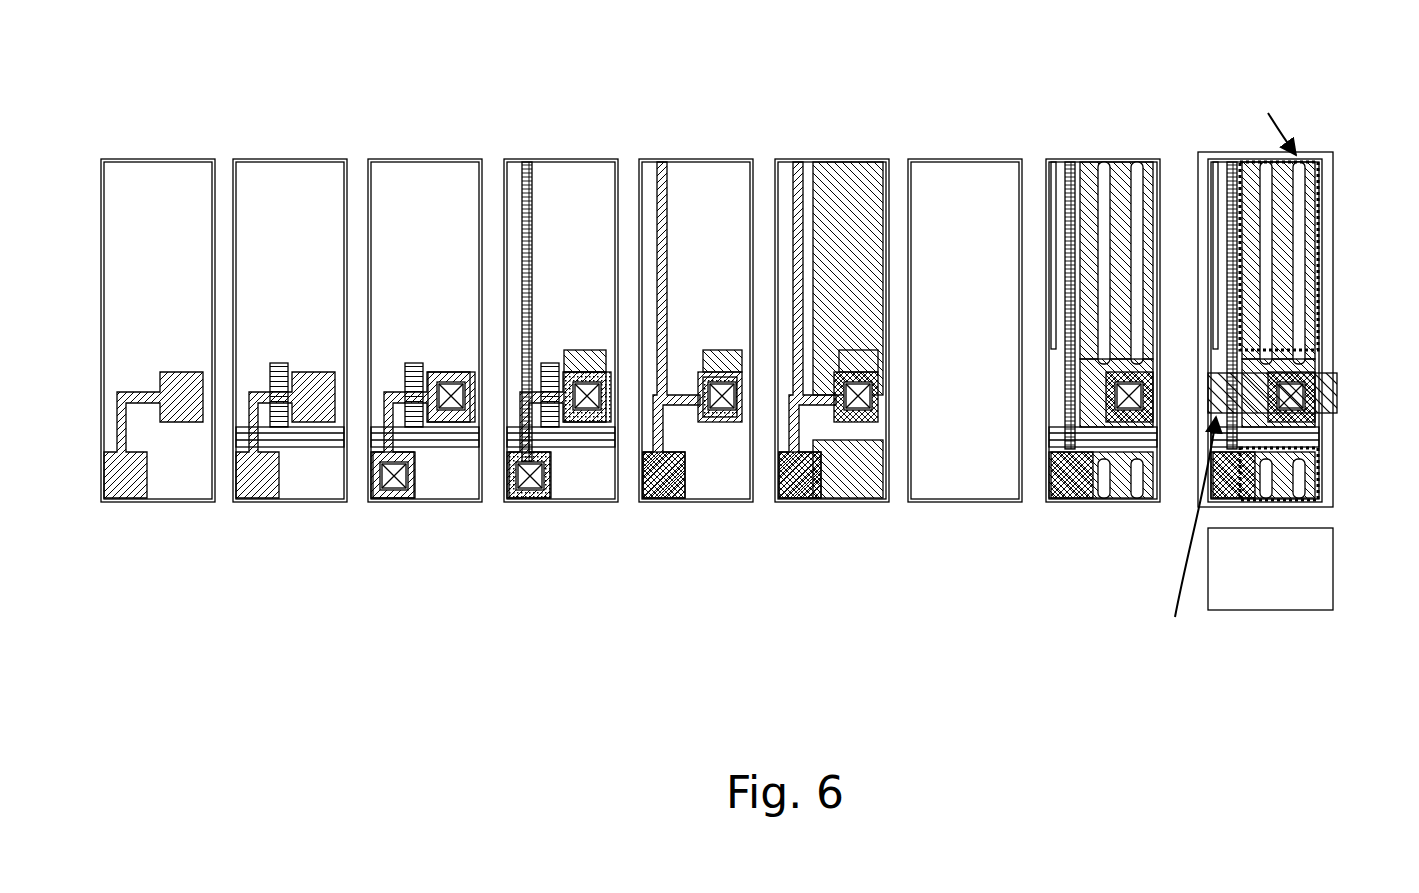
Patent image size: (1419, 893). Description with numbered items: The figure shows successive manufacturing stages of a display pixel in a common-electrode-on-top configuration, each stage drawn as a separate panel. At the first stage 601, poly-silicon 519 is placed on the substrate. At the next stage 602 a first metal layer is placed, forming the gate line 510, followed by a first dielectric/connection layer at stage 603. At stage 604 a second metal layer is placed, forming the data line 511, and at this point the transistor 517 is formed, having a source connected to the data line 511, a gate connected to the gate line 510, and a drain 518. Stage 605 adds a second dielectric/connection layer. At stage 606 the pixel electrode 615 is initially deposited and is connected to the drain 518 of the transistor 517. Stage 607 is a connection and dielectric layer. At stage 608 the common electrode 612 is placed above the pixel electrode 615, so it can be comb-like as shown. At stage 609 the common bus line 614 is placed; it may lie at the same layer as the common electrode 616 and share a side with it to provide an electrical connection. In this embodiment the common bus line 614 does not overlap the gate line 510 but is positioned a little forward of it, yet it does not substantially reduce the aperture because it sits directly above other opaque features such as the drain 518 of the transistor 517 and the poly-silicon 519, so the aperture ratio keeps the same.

The gate line 510 is at (377, 482).
The data line 511 is at (562, 273).
The transistor 517 is at (576, 525).
The drain 518 is at (804, 325).
The poly-silicon 519 is at (210, 298).
The poly-silicon stage 601 is at (209, 381).
The first metal layer stage 602 is at (375, 416).
The first dielectric/connection layer stage 603 is at (425, 415).
The second metal layer stage 604 is at (573, 378).
The second dielectric/connection layer stage 605 is at (775, 373).
The pixel electrode stage 606 is at (832, 391).
The connection and dielectric layer stage 607 is at (972, 450).
The common electrode stage 608 is at (1196, 388).
The common bus line stage 609 is at (1243, 382).
The common electrode 612 is at (1201, 252).
The common bus line 614 is at (1295, 351).
The pixel electrode 615 is at (848, 286).
The common electrode 616 is at (1311, 311).